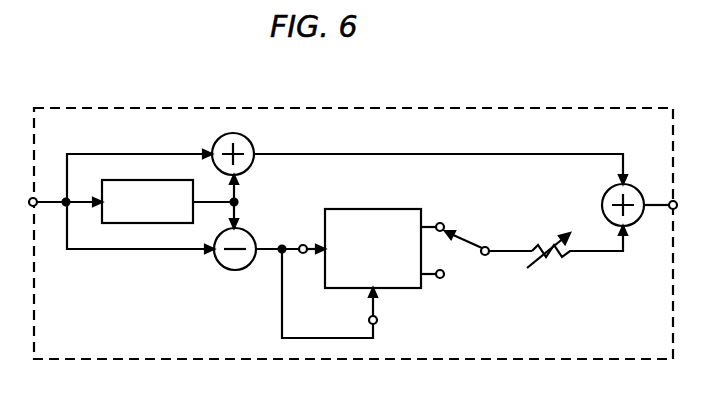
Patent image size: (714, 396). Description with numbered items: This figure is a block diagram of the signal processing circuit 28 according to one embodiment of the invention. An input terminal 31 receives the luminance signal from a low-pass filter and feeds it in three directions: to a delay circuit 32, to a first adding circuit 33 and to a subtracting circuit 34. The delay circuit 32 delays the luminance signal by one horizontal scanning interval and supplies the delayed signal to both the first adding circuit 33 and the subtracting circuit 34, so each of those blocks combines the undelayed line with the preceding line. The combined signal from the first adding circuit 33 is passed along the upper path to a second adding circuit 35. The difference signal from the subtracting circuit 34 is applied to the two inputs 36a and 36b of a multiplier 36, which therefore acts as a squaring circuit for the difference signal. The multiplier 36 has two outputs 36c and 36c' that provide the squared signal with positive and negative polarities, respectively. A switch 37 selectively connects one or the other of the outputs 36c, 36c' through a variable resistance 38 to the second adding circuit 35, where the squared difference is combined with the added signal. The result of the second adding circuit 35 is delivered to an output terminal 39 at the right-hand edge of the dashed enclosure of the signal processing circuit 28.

The signal processing circuit 28 is at (389, 108).
The input terminal 31 is at (37, 198).
The delay circuit 32 is at (138, 180).
The first adding circuit 33 is at (245, 136).
The subtracting circuit 34 is at (229, 270).
The second adding circuit 35 is at (637, 187).
The multiplier 36 is at (370, 209).
The multiplier input 36a is at (303, 244).
The multiplier input 36b is at (378, 322).
The multiplier output 36c is at (455, 208).
The multiplier output 36c' is at (458, 290).
The switch 37 is at (482, 246).
The variable resistance 38 is at (555, 257).
The output terminal 39 is at (670, 210).